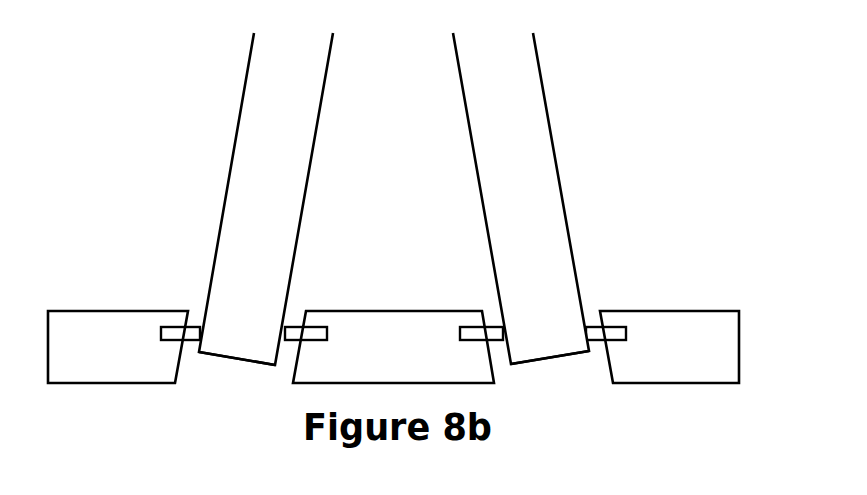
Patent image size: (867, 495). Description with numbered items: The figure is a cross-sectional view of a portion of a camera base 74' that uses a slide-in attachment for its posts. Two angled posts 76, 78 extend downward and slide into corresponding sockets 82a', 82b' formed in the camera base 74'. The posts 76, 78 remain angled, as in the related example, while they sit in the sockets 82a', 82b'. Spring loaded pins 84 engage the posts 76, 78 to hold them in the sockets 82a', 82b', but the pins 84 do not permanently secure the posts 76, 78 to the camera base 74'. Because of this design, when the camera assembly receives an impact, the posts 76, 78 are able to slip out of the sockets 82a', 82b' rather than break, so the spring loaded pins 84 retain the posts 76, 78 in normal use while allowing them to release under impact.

The camera base 74' is at (705, 343).
The post 76 is at (230, 173).
The post 78 is at (560, 190).
The socket 82a' is at (215, 398).
The socket 82b' is at (583, 397).
The spring loaded pin 84 is at (168, 327).